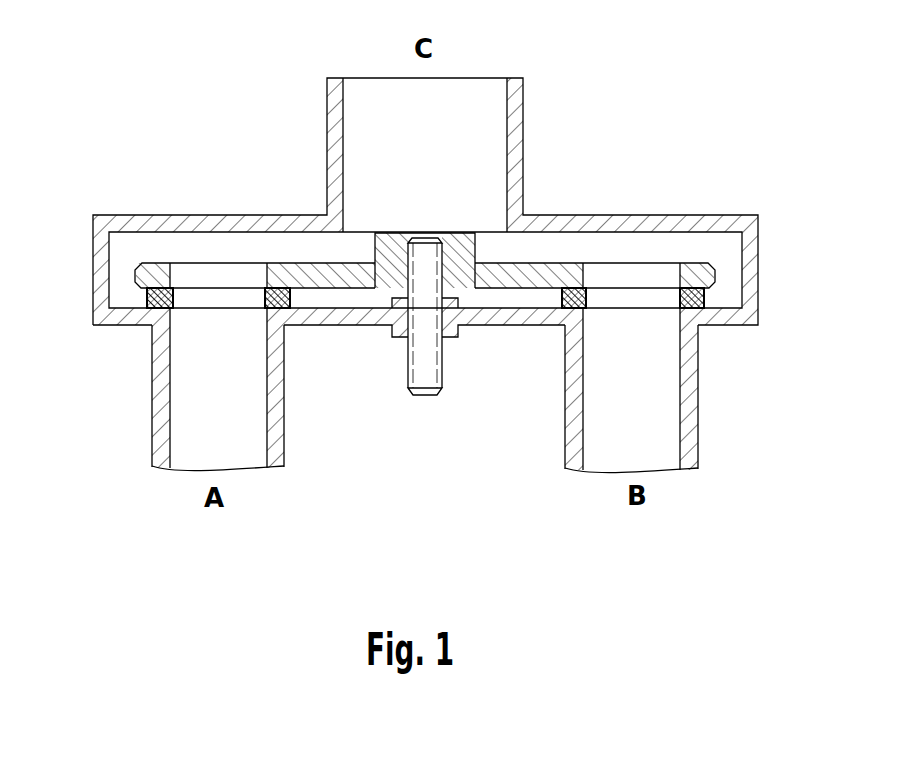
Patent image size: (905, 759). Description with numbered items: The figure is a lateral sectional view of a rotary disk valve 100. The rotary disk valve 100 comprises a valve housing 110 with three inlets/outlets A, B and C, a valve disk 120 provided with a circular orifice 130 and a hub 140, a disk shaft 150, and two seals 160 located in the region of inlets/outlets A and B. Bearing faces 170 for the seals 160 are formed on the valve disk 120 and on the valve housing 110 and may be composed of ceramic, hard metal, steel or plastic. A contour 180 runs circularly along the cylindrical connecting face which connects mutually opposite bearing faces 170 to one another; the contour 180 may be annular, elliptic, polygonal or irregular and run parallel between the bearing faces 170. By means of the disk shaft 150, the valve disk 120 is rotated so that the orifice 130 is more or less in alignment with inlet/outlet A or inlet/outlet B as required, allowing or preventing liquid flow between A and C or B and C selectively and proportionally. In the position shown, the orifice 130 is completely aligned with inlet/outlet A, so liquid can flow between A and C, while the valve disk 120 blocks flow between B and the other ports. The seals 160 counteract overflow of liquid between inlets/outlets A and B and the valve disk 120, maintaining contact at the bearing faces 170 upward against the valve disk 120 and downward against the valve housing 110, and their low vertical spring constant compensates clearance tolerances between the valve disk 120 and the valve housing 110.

The rotary disk valve 100 is at (696, 66).
The valve housing 110 is at (731, 222).
The valve disk 120 is at (559, 270).
The circular orifice 130 is at (218, 273).
The hub 140 is at (382, 250).
The disk shaft 150 is at (423, 396).
The seals 160 is at (153, 322).
The bearing faces 170 is at (170, 300).
The contour 180 is at (700, 327).